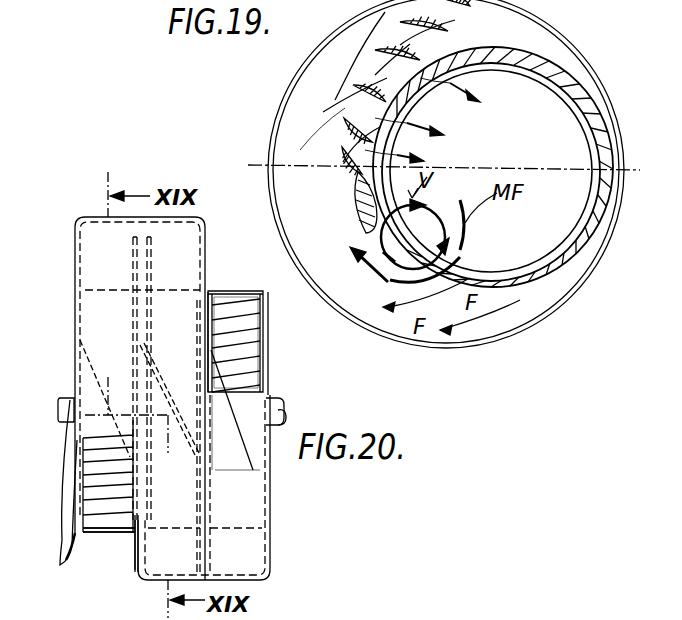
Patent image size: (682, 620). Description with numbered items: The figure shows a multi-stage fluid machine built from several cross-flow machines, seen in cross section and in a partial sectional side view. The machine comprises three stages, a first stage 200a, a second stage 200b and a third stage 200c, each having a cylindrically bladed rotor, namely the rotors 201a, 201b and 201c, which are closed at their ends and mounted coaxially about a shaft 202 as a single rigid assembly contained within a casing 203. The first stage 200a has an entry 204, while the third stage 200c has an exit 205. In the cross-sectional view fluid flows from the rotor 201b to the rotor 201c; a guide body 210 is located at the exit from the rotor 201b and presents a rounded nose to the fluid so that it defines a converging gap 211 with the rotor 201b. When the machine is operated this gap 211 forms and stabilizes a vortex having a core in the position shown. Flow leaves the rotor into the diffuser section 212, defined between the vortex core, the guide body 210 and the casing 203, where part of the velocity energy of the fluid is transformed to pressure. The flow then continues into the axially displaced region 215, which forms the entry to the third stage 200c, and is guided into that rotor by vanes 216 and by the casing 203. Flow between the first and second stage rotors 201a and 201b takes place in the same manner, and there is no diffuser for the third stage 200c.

In FIG. 19, the casing 203 is at (507, 333).
In FIG. 20, the casing 203 is at (88, 217).
In FIG. 19, the cylindrically bladed rotor 201c is at (570, 88).
In FIG. 20, the cylindrically bladed rotor 201c is at (93, 488).
In FIG. 19, the cylindrically bladed rotor 201b is at (570, 270).
In FIG. 20, the cylindrically bladed rotor 201b is at (180, 308).
In FIG. 19, the vanes 216 is at (393, 56).
In FIG. 19, the axially displaced region 215 is at (368, 97).
In FIG. 20, the axially displaced region 215 is at (100, 368).
In FIG. 19, the diffuser section 212 is at (332, 199).
In FIG. 19, the guide body 210 is at (365, 232).
In FIG. 19, the converging gap 211 is at (365, 262).
In FIG. 20, the converging gap 211 is at (147, 412).
In FIG. 20, the second stage 200b is at (190, 270).
In FIG. 20, the third stage 200c is at (98, 328).
In FIG. 20, the cylindrically bladed rotor 201a is at (245, 332).
In FIG. 20, the entry 204 is at (230, 380).
In FIG. 20, the shaft 202 is at (282, 410).
In FIG. 20, the first stage 200a is at (252, 500).
In FIG. 20, the exit 205 is at (108, 522).